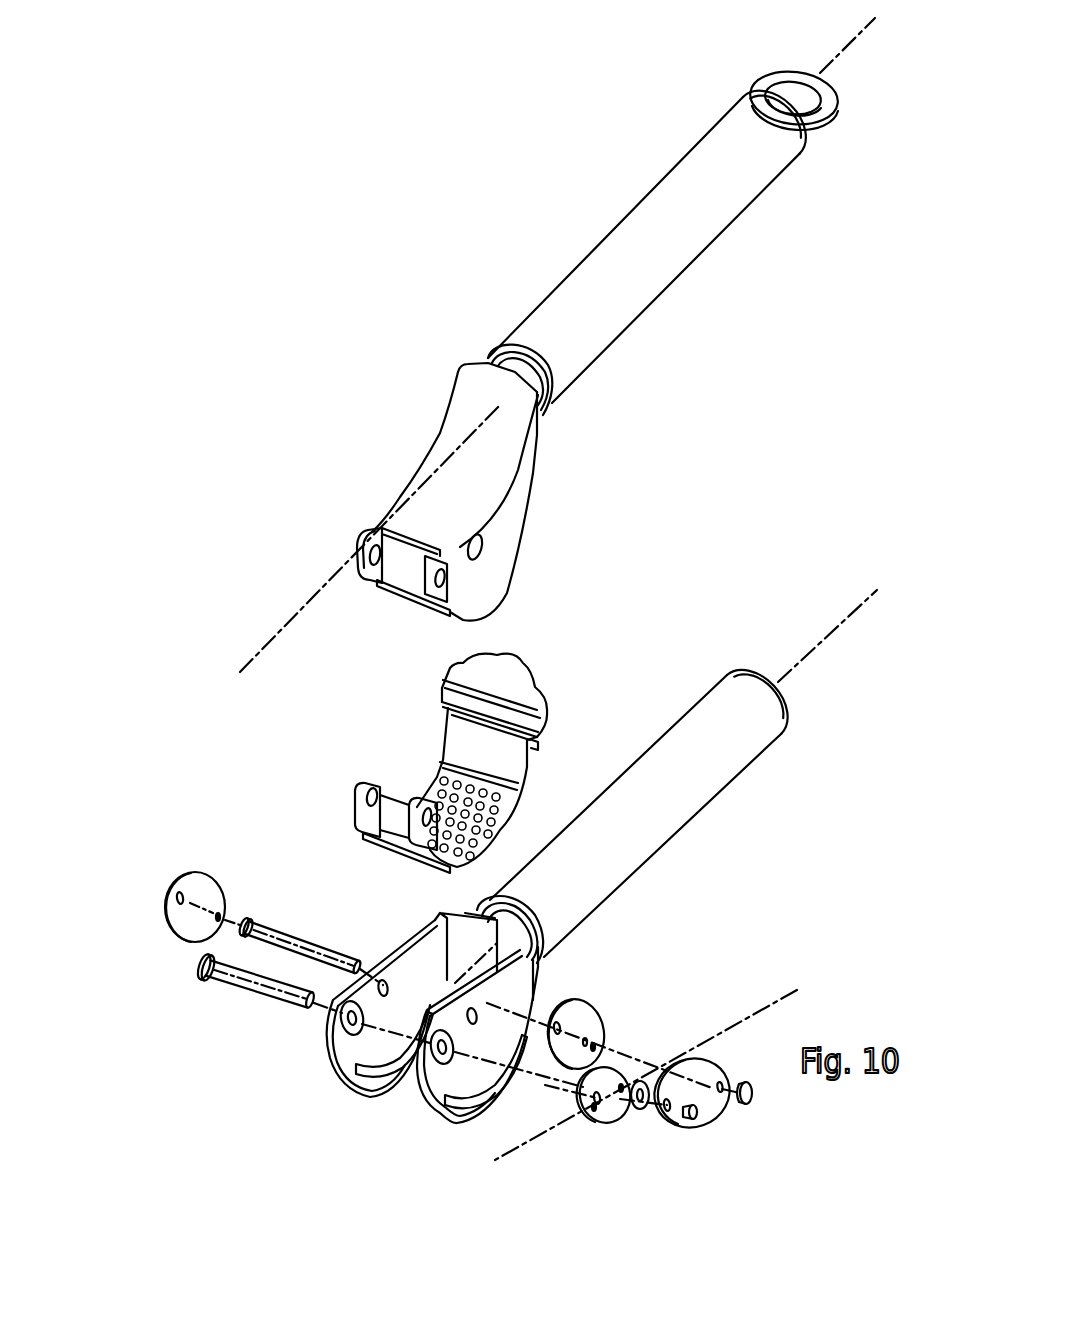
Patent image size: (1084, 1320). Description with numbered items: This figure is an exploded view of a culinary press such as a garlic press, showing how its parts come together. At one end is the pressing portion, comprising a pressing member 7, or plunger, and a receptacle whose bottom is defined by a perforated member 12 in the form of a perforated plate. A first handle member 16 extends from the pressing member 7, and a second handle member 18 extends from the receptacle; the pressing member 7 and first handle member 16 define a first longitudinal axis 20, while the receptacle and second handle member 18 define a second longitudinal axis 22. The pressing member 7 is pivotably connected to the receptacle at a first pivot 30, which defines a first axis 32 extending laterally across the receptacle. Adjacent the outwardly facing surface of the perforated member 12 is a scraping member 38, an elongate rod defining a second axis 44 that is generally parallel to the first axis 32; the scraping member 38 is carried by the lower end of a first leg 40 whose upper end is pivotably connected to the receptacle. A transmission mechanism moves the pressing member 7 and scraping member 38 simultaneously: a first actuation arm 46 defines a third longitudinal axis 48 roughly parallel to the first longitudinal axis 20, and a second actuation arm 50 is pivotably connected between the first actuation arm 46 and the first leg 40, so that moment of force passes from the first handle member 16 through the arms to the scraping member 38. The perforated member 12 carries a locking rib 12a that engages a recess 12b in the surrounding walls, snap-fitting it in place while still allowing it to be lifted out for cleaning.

The pressing member 7 is at (510, 528).
The perforated member 12 is at (483, 752).
The locking rib 12a is at (537, 743).
The recess 12b is at (538, 960).
The first handle member 16 is at (652, 223).
The second handle member 18 is at (677, 791).
The first longitudinal axis 20 is at (354, 554).
The second longitudinal axis 22 is at (407, 1031).
The first pivot 30 is at (227, 983).
The first axis 32 is at (320, 540).
The scraping member 38 is at (263, 927).
The first leg 40 is at (578, 1022).
The second axis 44 is at (165, 893).
The first actuation arm 46 is at (612, 1104).
The third longitudinal axis 48 is at (662, 1065).
The second actuation arm 50 is at (705, 1098).